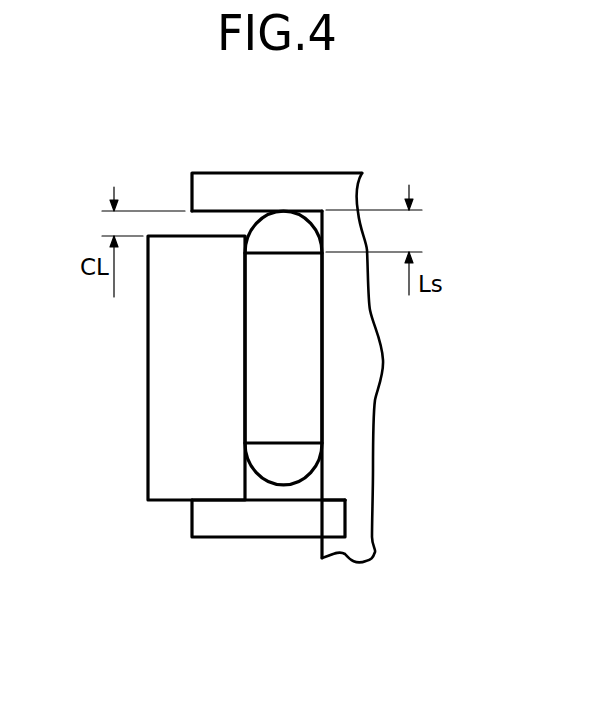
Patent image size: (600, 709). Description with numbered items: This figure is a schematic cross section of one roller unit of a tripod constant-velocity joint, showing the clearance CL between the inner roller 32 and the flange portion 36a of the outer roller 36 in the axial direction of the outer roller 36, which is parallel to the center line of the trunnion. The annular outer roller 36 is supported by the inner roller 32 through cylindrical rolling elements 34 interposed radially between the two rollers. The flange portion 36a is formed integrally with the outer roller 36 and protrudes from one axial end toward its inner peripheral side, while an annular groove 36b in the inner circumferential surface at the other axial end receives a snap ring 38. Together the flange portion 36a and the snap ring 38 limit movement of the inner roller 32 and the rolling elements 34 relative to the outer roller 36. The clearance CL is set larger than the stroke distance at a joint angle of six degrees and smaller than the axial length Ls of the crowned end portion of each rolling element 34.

The inner roller 32 is at (162, 394).
The cylindrical rolling elements 34 is at (312, 383).
The outer roller 36 is at (350, 458).
The flange portion 36a is at (237, 187).
The annular groove 36b is at (338, 497).
The snap ring 38 is at (218, 522).